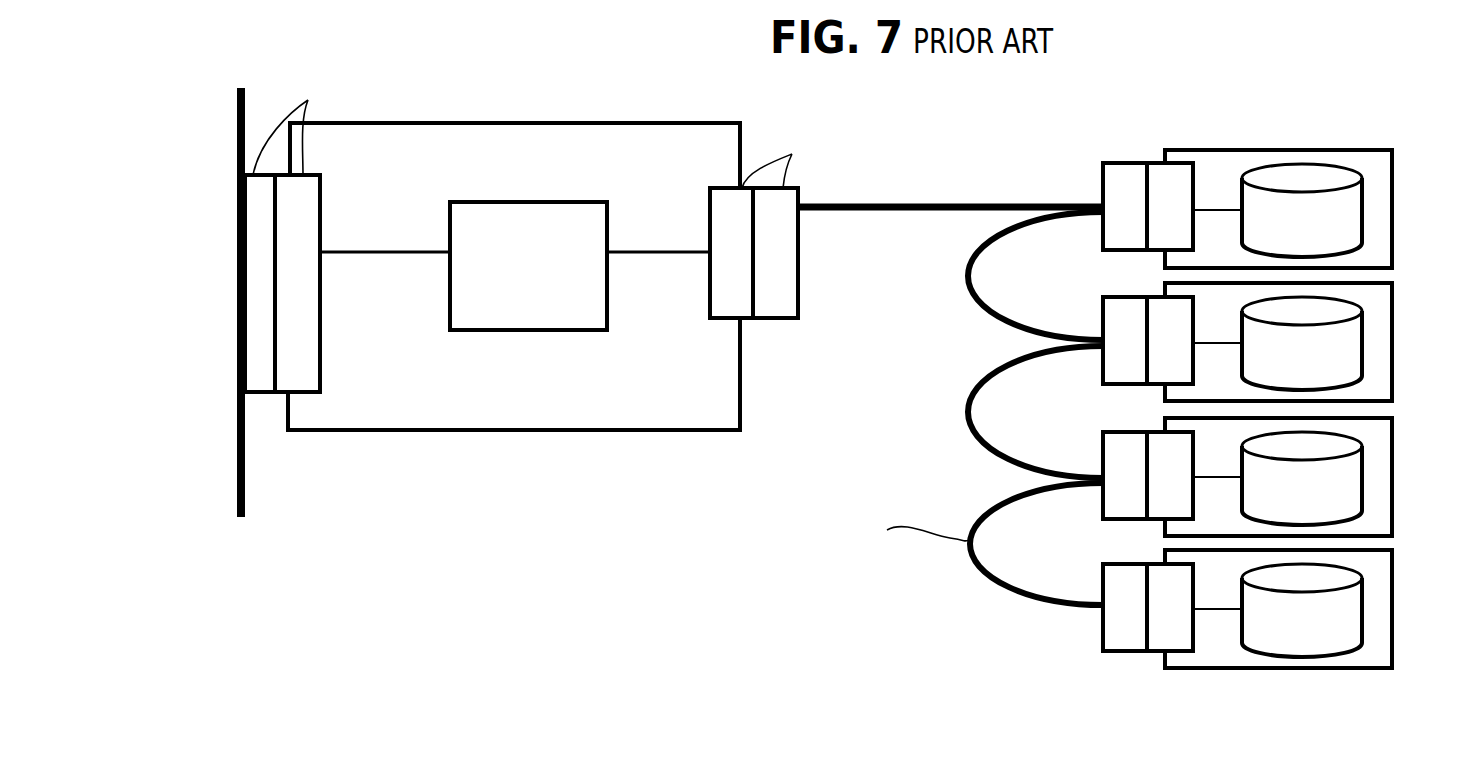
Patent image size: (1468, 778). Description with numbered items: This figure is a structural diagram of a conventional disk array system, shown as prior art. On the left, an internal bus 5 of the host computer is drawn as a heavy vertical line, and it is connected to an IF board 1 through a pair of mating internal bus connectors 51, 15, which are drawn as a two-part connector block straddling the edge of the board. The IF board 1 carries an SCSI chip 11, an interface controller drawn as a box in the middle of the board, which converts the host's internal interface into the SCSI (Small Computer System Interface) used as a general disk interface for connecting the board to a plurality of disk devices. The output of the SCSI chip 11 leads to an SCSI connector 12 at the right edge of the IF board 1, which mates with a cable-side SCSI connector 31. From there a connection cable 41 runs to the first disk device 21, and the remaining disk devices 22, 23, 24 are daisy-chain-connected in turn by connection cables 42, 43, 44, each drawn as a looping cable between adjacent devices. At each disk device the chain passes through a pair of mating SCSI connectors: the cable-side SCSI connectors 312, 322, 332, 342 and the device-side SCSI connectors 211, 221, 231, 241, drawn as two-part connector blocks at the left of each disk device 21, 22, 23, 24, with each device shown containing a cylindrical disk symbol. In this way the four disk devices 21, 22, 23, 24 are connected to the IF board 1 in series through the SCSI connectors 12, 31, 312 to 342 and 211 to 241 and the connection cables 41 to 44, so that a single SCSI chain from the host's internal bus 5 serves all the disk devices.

The IF board 1 is at (602, 433).
The internal bus 5 is at (237, 463).
The internal bus connector 51 is at (241, 350).
The internal bus connector 15 is at (313, 351).
The SCSI chip 11 is at (557, 332).
The SCSI connector 12 is at (728, 320).
The SCSI connector 31 is at (776, 318).
The connection cable 41 is at (878, 210).
The connection cable 42 is at (993, 322).
The connection cable 43 is at (992, 459).
The connection cable 44 is at (1008, 596).
The disk device 21 is at (1393, 195).
The disk device 22 is at (1393, 325).
The disk device 23 is at (1393, 456).
The disk device 24 is at (1393, 588).
The SCSI connector 211 is at (1183, 168).
The SCSI connector 221 is at (1163, 308).
The SCSI connector 231 is at (1160, 442).
The SCSI connector 241 is at (1160, 574).
The SCSI connector 312 is at (1103, 180).
The SCSI connector 322 is at (1103, 318).
The SCSI connector 332 is at (1103, 452).
The SCSI connector 342 is at (1103, 584).